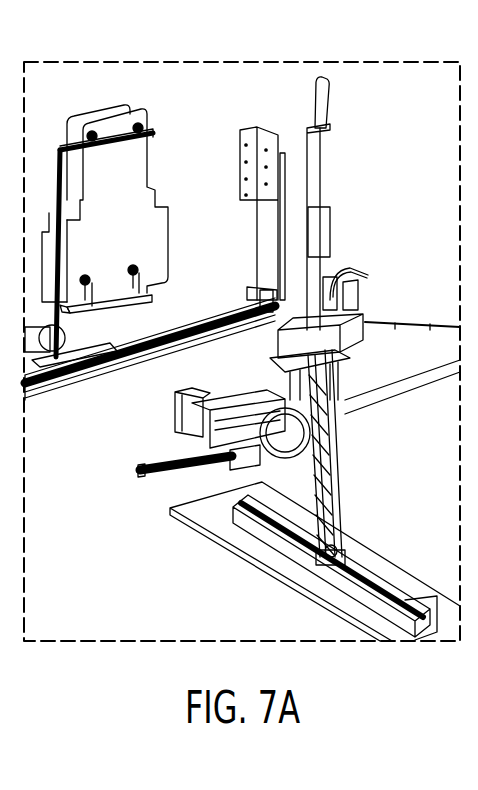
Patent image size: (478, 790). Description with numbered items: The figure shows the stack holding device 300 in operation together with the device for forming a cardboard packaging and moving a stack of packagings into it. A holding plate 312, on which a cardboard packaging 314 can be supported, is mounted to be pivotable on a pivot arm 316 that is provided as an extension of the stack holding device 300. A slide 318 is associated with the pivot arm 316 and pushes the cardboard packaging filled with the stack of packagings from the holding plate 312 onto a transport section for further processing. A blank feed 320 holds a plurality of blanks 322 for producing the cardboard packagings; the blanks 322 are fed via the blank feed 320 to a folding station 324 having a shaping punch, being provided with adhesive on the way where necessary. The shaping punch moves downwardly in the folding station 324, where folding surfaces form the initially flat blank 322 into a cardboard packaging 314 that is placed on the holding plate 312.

The stack holding device 300 is at (158, 423).
The holding plate 312 is at (333, 364).
The cardboard packaging 314 is at (349, 345).
The pivot arm 316 is at (344, 444).
The slide 318 is at (250, 480).
The blank feed 320 is at (158, 160).
The blank 322 is at (80, 103).
The folding station 324 is at (371, 308).